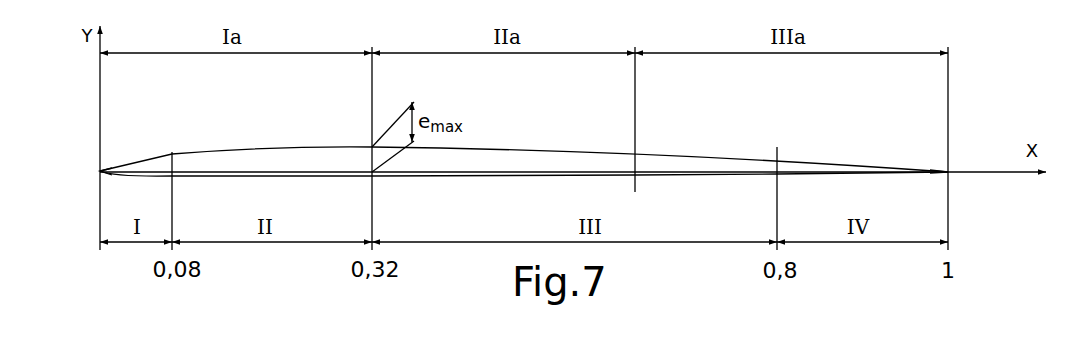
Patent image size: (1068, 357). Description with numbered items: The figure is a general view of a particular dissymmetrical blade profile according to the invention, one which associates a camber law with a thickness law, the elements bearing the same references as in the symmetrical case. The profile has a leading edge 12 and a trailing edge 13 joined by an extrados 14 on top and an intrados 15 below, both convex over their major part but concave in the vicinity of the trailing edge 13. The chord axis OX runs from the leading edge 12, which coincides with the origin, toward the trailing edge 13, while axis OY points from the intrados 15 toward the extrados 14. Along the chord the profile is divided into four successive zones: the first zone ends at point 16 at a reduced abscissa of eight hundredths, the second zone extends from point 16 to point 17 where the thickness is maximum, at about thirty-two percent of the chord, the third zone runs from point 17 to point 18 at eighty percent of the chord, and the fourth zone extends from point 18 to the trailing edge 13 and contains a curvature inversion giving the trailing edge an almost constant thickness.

The leading edge 12 is at (104, 169).
The trailing edge 13 is at (947, 171).
The extrados 14 is at (272, 147).
The intrados 15 is at (262, 177).
The point at reduced abscissa 0.08 16 is at (173, 152).
The point of maximum thickness 17 is at (371, 147).
The point at abscissa 0.80 18 is at (778, 162).